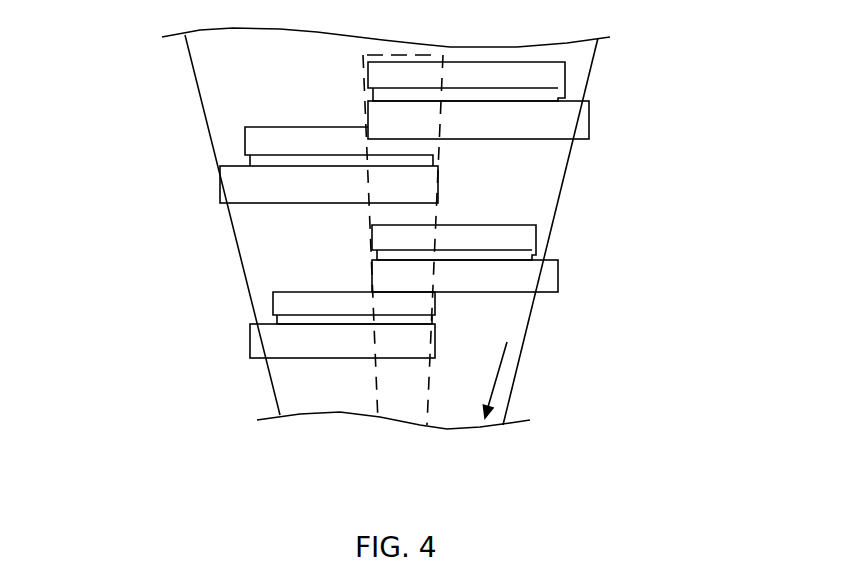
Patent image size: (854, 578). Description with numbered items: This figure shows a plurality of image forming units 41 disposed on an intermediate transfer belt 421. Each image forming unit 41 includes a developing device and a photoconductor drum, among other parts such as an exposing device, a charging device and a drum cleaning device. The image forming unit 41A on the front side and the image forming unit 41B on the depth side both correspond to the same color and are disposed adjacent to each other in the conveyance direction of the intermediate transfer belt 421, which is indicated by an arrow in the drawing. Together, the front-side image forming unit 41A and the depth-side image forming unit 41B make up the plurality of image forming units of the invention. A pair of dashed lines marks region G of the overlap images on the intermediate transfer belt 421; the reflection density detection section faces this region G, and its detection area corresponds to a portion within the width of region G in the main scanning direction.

The image forming unit 41 is at (401, 210).
The image forming unit on the front side 41A is at (245, 242).
The image forming unit on the depth side 41B is at (559, 177).
The intermediate transfer belt 421 is at (523, 191).
The region of the overlap images G is at (432, 393).